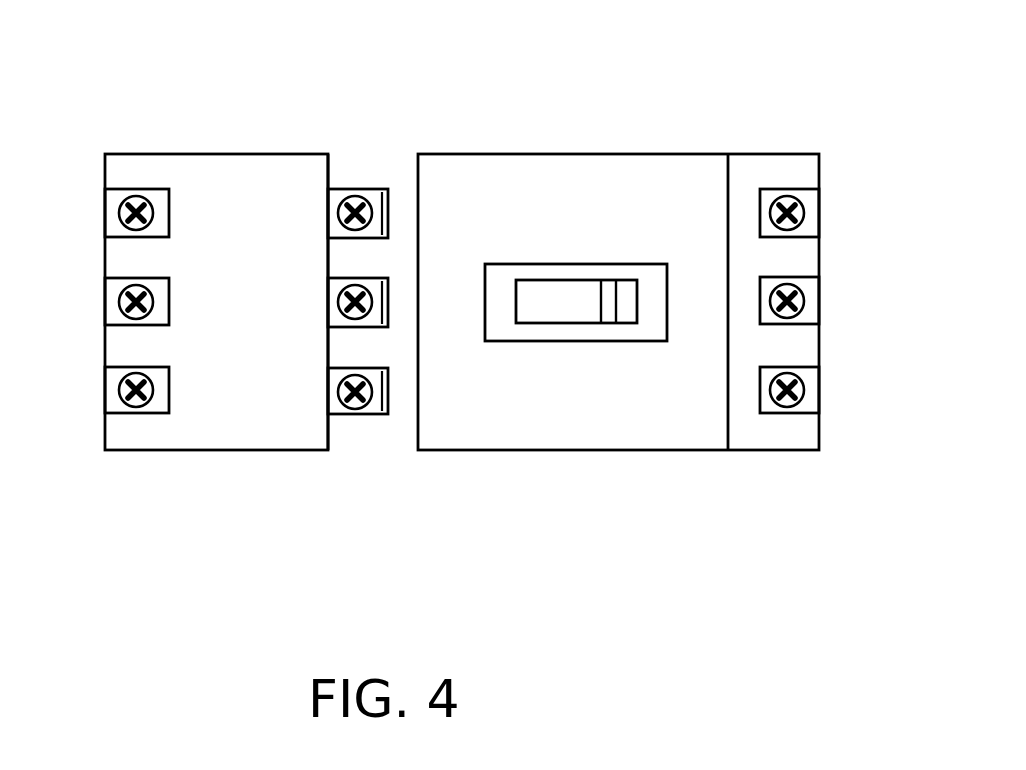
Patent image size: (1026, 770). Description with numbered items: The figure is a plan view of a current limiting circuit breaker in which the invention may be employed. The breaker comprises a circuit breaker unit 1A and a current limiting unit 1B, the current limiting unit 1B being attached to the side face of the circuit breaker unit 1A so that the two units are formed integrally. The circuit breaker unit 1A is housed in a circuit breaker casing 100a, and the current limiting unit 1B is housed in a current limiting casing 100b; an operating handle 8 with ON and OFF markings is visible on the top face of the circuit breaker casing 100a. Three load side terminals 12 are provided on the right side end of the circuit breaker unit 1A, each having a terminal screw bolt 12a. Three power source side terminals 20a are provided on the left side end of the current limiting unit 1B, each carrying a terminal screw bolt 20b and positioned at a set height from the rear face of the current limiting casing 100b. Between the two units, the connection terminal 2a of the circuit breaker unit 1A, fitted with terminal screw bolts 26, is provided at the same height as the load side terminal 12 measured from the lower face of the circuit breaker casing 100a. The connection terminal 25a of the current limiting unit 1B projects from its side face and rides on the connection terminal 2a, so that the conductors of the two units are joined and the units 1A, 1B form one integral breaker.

The circuit breaker unit 1A is at (677, 168).
The current limiting unit 1B is at (208, 168).
The circuit breaker casing 100a is at (533, 168).
The current limiting casing 100b is at (247, 168).
The connection terminal 2a is at (385, 205).
The operating handle 8 is at (627, 287).
The load side terminal 12 is at (808, 232).
The terminal screw bolt 12a is at (788, 198).
The power source side terminal 20a is at (112, 228).
The terminal screw bolt 20b is at (135, 199).
The connection terminal 25a is at (338, 300).
The terminal screw bolt 26 is at (357, 196).